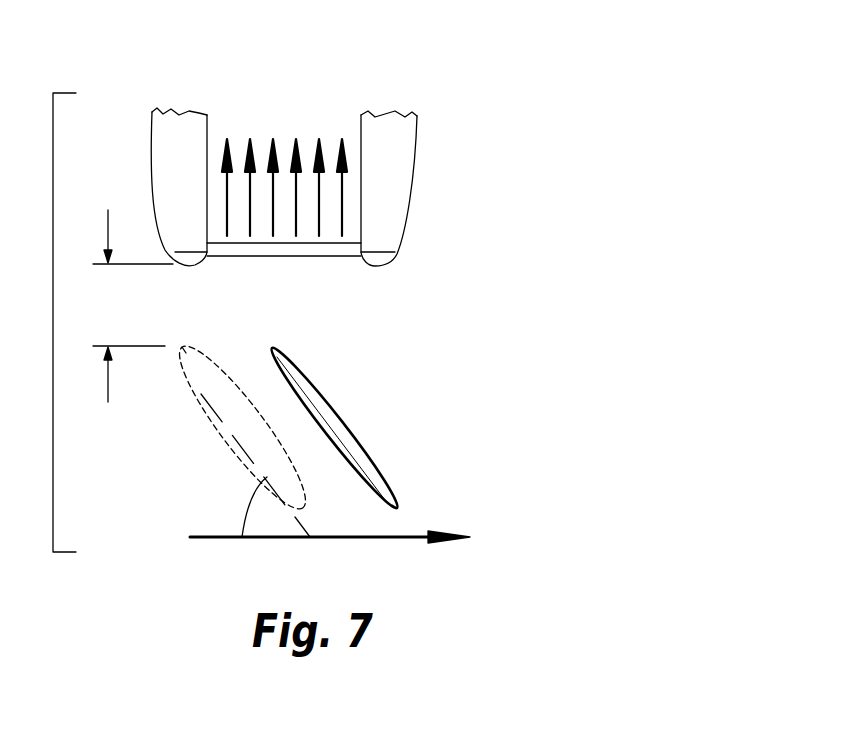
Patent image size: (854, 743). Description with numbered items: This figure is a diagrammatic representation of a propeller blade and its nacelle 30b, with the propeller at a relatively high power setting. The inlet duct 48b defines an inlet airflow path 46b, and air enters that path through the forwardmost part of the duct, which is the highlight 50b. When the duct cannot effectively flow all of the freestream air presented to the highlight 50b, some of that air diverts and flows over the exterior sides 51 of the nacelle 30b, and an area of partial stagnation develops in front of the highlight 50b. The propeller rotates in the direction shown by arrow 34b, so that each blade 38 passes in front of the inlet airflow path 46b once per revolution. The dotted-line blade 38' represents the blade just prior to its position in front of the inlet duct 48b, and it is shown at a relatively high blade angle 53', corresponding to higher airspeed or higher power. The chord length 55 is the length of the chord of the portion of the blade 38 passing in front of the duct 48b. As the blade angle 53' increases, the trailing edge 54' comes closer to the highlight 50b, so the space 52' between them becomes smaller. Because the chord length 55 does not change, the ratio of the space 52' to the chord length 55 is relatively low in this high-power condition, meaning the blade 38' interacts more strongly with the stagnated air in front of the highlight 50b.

The nacelle 30b is at (170, 137).
The inlet airflow path 46b is at (283, 143).
The space 52' is at (133, 289).
The exterior sides 51 is at (403, 240).
The highlight 50b is at (373, 266).
The inlet duct 48b is at (357, 256).
The propeller blade at high blade angle 38' is at (228, 435).
The trailing edge 54' is at (215, 346).
The blade angle 53' is at (209, 506).
The arrow of propeller rotation 34b is at (280, 538).
The propeller blade 38 is at (334, 462).
The chord length 55 is at (388, 496).